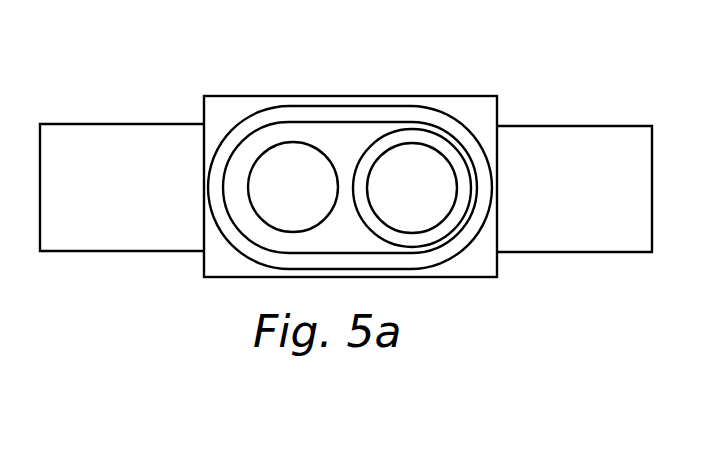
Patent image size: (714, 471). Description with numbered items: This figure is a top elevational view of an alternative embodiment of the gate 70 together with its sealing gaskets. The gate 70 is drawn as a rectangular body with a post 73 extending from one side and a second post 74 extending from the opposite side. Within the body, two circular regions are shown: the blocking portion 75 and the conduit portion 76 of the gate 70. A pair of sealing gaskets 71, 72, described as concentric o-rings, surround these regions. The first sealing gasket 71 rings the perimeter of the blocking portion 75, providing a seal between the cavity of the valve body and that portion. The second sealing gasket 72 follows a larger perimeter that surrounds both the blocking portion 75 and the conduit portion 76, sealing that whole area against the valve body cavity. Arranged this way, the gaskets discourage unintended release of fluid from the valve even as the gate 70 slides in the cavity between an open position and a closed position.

The gate 70 is at (227, 116).
The sealing gasket 71 is at (429, 141).
The second sealing gasket 72 is at (351, 115).
The post 73 is at (127, 183).
The post 74 is at (579, 163).
The blocking portion 75 is at (414, 193).
The conduit portion 76 is at (285, 195).